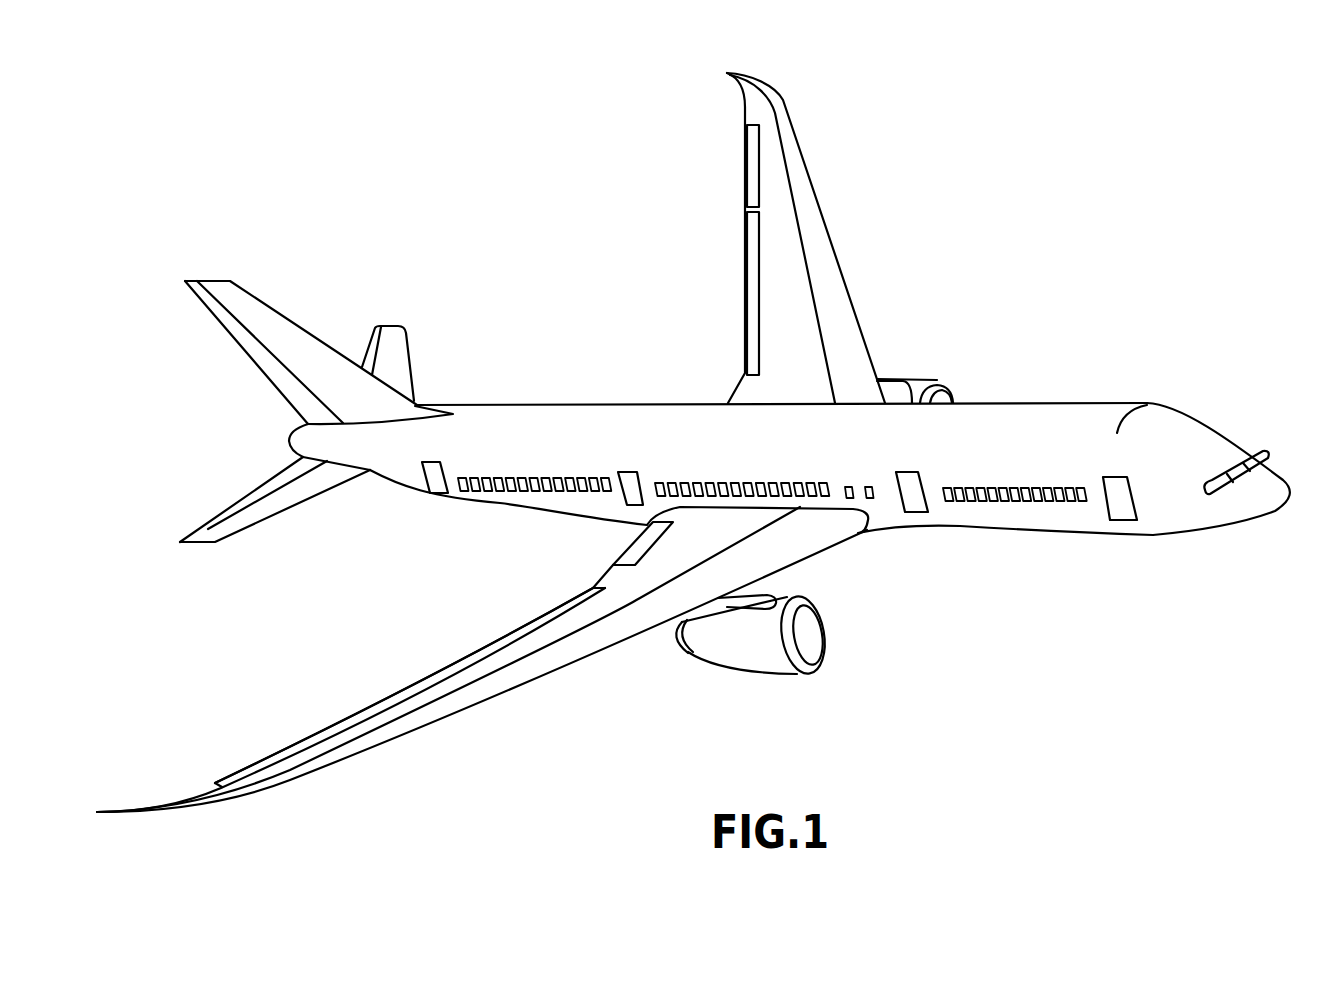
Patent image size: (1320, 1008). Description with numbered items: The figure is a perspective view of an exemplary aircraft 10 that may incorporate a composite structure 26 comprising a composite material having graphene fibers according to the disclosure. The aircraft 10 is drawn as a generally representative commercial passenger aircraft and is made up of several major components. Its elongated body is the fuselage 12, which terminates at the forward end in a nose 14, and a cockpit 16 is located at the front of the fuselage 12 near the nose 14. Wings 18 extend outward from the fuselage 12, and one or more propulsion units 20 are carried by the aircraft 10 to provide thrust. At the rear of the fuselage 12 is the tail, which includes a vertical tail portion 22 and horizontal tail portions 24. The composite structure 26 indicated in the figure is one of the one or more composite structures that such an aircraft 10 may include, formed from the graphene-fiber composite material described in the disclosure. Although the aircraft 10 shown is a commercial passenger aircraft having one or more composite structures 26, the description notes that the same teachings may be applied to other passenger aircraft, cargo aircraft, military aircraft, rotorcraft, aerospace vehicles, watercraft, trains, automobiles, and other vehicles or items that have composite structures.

The aircraft 10 is at (1083, 210).
The fuselage 12 is at (1017, 413).
The nose 14 is at (1272, 500).
The cockpit 16 is at (1260, 457).
The wings 18 is at (788, 158).
The propulsion units 20 is at (918, 390).
The vertical tail portion 22 is at (277, 333).
The horizontal tail portions 24 is at (393, 363).
The composite structure 26 is at (430, 685).